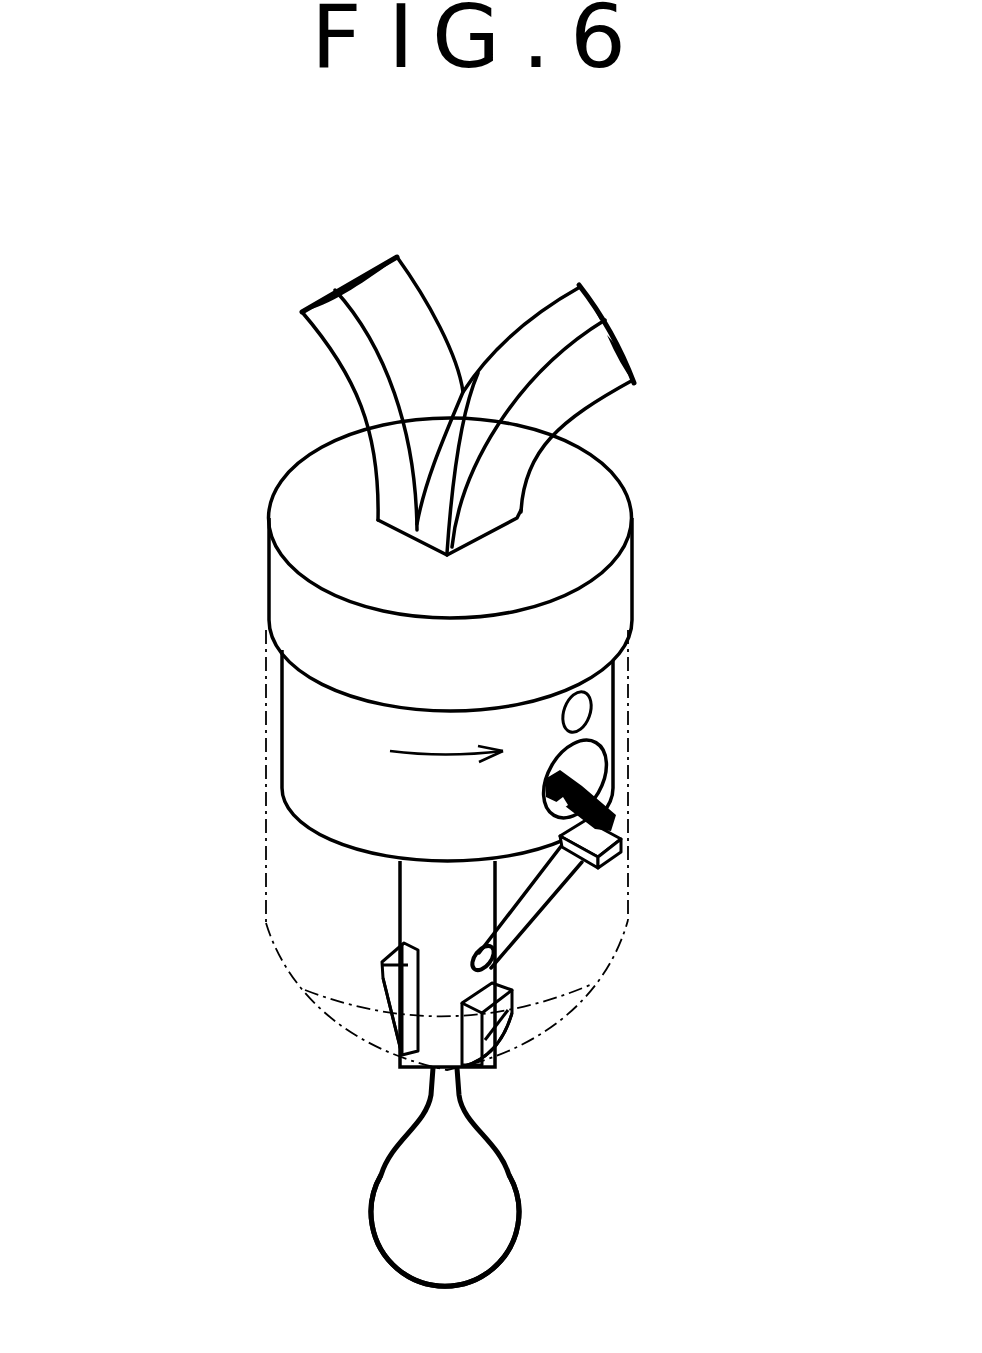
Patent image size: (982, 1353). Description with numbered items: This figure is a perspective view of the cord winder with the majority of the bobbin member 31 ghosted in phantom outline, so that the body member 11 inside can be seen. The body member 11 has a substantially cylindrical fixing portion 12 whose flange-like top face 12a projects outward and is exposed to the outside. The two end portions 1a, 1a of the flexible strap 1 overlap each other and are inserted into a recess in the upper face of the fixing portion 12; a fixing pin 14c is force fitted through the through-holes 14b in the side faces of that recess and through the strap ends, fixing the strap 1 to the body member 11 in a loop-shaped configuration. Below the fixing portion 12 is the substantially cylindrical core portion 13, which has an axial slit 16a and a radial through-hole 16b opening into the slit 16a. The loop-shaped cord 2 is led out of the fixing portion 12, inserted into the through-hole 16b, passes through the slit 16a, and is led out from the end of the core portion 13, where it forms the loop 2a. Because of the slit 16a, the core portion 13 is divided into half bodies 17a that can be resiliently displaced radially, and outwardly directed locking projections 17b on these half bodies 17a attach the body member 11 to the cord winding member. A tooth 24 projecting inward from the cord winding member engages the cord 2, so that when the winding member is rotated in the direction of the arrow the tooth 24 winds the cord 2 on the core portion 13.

The strap 1 is at (464, 367).
The end portion of the strap 1a is at (393, 487).
The loop-shaped cord 2 is at (549, 1021).
The loop 2a is at (510, 1243).
The body member 11 is at (424, 707).
The fixing portion 12 is at (447, 748).
The top face of the fixing portion 12a is at (320, 460).
The core portion 13 is at (410, 880).
The through-hole 14b is at (578, 702).
The fixing pin 14c is at (575, 712).
The slit 16a is at (382, 963).
The through-hole 16b is at (498, 970).
The half body 17a is at (463, 925).
The locking projection 17b is at (384, 975).
The tooth 24 is at (610, 831).
The bobbin member 31 is at (252, 787).